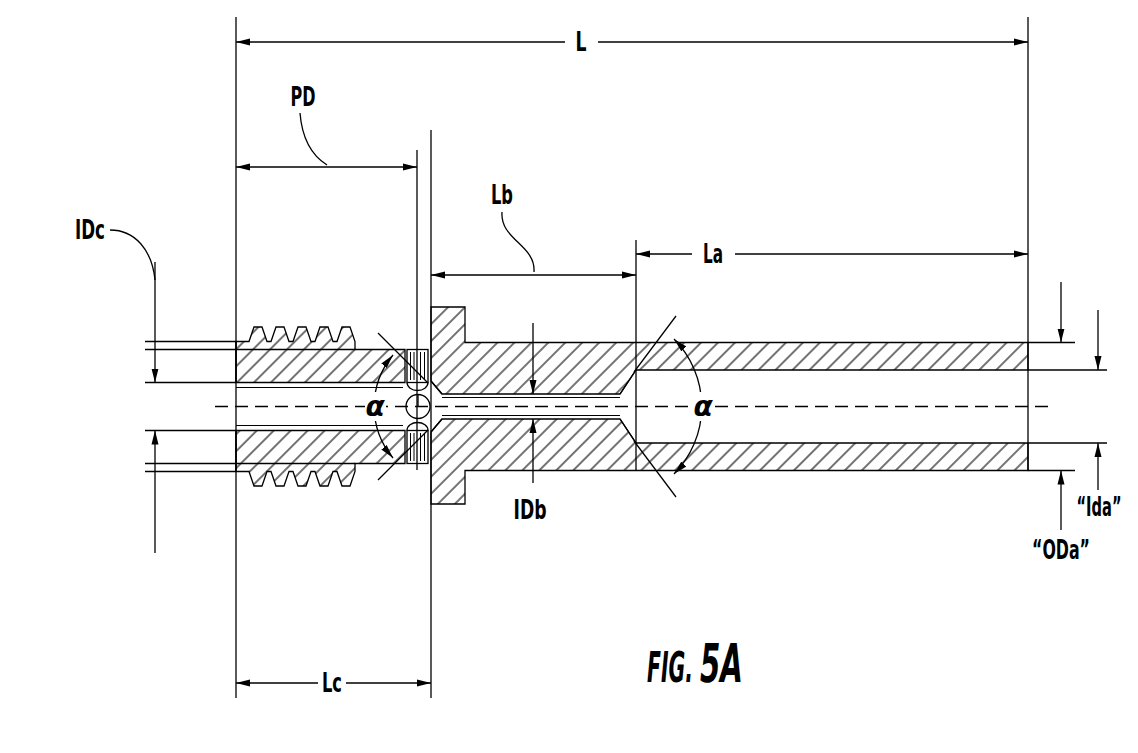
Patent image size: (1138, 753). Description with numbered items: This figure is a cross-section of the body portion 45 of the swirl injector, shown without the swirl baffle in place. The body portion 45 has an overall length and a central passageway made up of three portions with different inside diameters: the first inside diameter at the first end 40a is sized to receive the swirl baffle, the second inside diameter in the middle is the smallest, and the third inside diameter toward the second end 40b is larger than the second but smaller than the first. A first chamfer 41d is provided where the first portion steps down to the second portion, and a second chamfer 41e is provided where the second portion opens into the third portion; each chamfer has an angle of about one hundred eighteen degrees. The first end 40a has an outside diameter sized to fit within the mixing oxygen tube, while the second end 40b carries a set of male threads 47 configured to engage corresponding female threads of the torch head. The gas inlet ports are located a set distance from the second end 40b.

The male threads 47 is at (277, 325).
The first end of the swirl injector body 40a is at (1057, 265).
The second end of the swirl injector body 40b is at (220, 492).
The second chamfer 41e is at (437, 432).
The first chamfer 41d is at (631, 428).
The body portion 45 is at (763, 471).